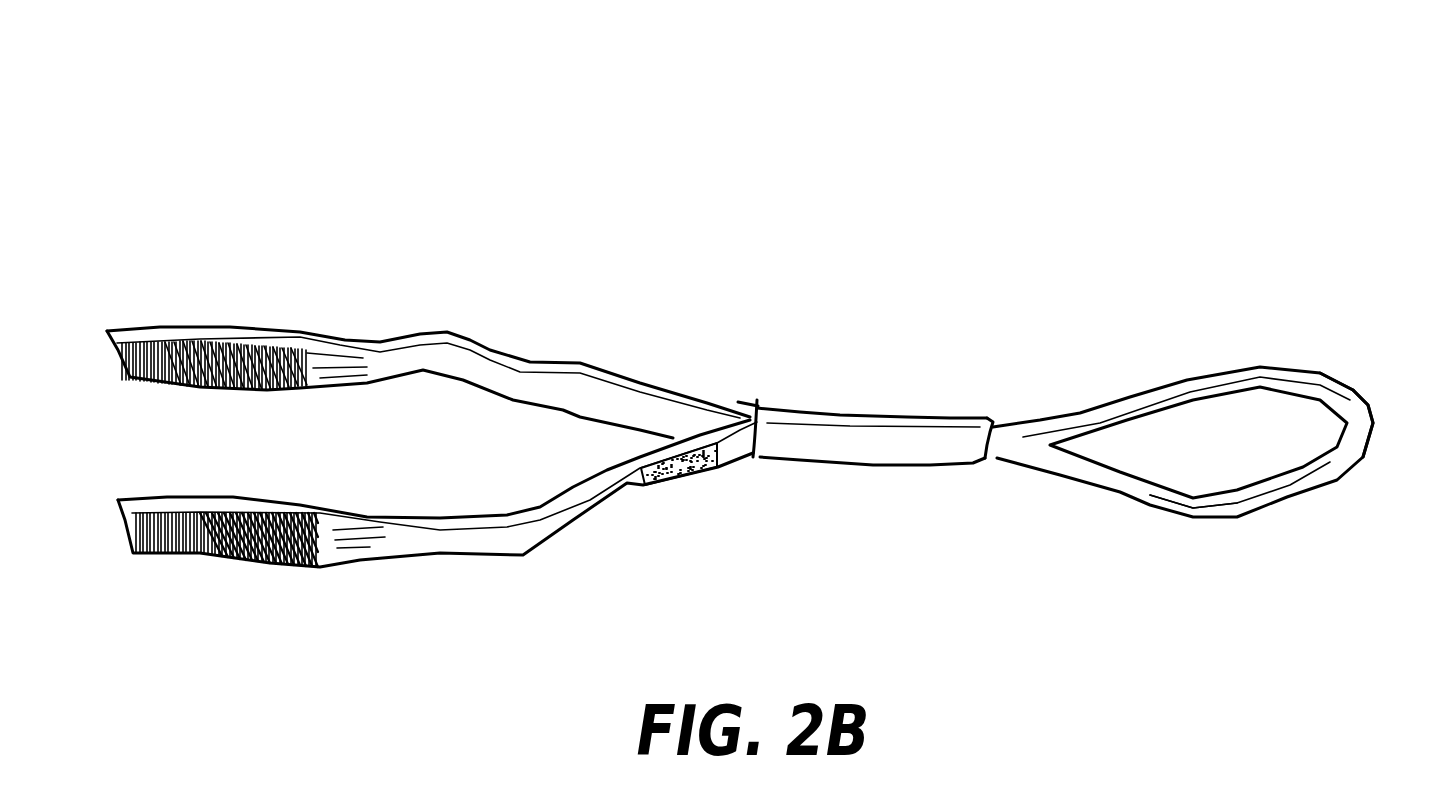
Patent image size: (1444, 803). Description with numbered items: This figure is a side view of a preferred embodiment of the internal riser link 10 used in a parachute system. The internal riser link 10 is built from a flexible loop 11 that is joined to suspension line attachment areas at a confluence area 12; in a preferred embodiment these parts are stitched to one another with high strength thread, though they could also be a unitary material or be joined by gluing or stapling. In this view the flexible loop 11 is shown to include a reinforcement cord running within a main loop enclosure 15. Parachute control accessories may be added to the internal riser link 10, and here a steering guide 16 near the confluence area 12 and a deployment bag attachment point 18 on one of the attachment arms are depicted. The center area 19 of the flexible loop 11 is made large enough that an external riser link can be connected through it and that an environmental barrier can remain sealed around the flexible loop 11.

The internal riser link 10 is at (554, 184).
The flexible loop 11 is at (1214, 445).
The confluence area 12 is at (875, 402).
The main loop enclosure 15 is at (1394, 446).
The steering guide 16 is at (738, 402).
The deployment bag attachment point 18 is at (696, 485).
The center area 19 is at (1223, 457).